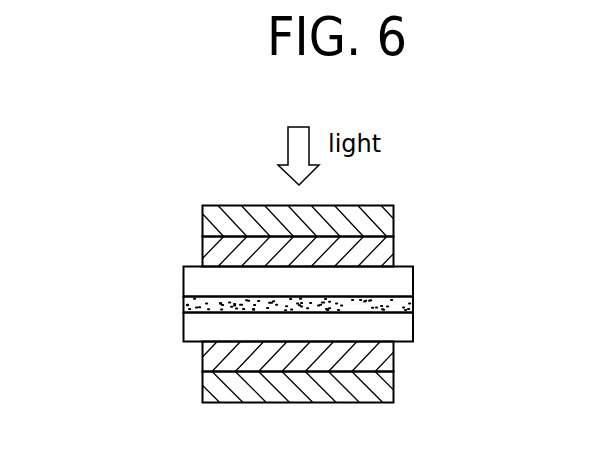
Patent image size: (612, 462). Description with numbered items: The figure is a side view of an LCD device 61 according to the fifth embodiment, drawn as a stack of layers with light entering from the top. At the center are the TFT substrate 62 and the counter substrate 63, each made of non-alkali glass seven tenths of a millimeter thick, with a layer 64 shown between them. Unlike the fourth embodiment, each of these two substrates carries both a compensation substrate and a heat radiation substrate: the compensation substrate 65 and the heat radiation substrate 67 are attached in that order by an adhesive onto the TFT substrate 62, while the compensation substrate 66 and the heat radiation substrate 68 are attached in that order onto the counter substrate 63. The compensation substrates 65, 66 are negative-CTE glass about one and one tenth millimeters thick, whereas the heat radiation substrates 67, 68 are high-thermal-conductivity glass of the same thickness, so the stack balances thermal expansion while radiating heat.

The LCD device 61 is at (168, 275).
The TFT substrate 62 is at (413, 330).
The counter substrate 63 is at (413, 277).
The light absorbing intrinsic layer 64 is at (413, 305).
The compensation substrate 65 is at (394, 367).
The compensation substrate 66 is at (394, 240).
The heat radiation substrate 67 is at (394, 388).
The heat radiation substrate 68 is at (394, 220).